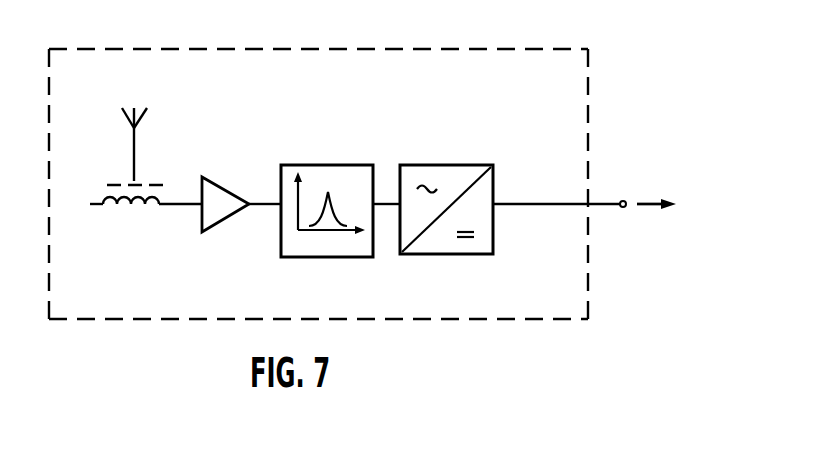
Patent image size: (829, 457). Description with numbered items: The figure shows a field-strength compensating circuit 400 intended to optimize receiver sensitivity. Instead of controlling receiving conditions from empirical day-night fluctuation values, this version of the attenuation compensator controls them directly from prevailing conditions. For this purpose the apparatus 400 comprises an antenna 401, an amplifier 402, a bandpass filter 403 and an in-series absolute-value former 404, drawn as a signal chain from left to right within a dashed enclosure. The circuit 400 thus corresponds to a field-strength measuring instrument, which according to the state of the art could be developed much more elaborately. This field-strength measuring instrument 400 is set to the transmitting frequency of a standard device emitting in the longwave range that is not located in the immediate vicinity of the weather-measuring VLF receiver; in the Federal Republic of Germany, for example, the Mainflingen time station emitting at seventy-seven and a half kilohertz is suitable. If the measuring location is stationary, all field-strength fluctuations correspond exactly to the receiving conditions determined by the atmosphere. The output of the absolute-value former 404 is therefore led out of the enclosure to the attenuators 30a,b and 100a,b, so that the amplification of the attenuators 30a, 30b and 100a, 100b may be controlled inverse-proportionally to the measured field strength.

The field-strength compensating circuit 400 is at (322, 62).
The antenna 401 is at (136, 167).
The amplifier 402 is at (210, 182).
The bandpass filter 403 is at (291, 166).
The absolute-value former 404 is at (410, 167).
The attenuators 30a,b is at (667, 189).
The attenuator 30a is at (667, 189).
The attenuator 30b is at (667, 189).
The attenuators 100a,b is at (672, 223).
The attenuator 100a is at (672, 223).
The attenuator 100b is at (672, 223).